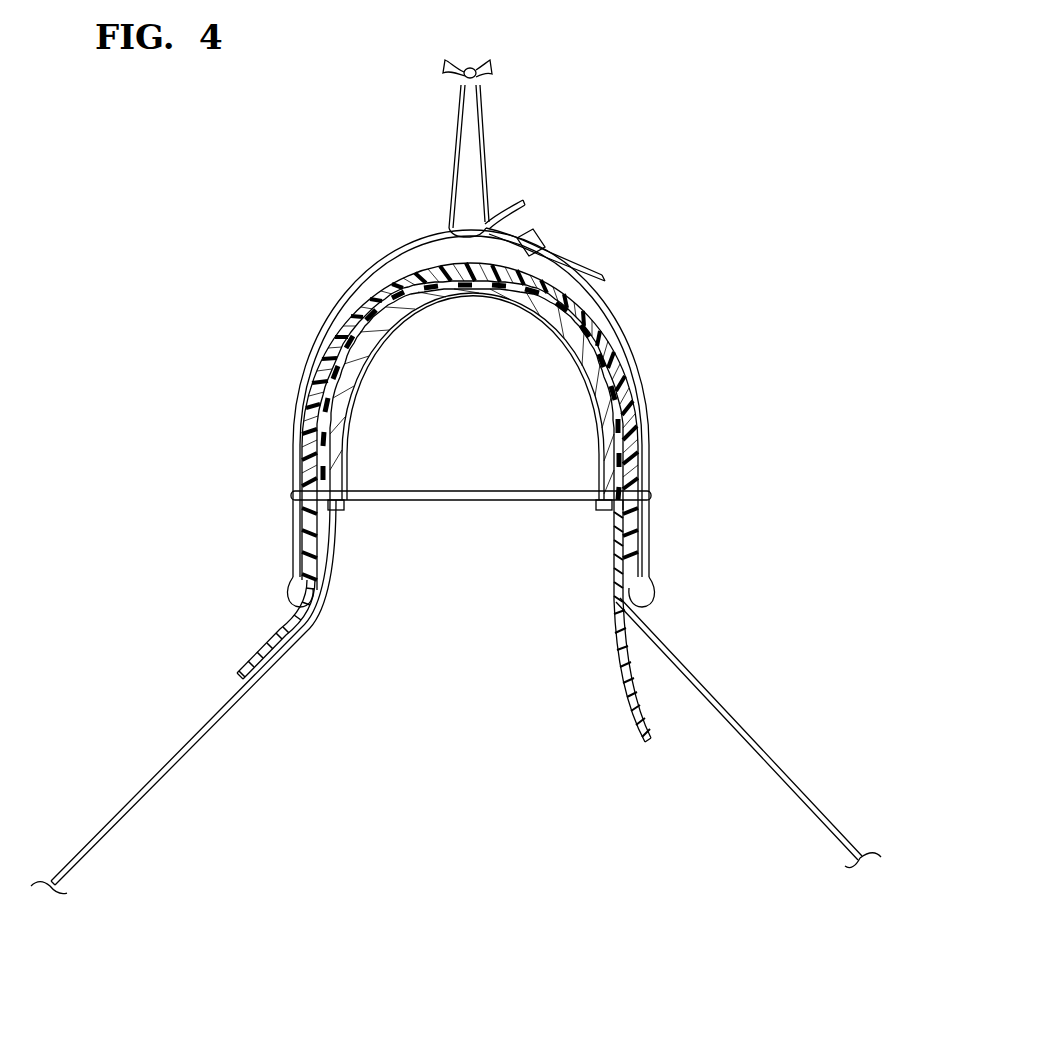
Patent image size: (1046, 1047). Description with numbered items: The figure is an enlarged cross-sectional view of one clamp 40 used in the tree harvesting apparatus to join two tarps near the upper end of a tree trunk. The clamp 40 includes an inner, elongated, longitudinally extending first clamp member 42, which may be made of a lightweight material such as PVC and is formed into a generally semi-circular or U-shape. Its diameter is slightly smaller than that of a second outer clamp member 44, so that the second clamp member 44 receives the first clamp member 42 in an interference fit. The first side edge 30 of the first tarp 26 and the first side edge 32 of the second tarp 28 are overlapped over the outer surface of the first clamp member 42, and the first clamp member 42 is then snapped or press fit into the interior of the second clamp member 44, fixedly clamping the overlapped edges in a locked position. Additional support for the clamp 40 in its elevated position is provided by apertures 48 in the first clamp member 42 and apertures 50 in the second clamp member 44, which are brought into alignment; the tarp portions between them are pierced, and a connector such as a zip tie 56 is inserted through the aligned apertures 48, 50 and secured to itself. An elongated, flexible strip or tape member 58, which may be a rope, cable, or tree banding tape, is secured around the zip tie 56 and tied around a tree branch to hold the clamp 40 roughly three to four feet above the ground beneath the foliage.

The clamp 40 is at (268, 281).
The zip tie 56 is at (616, 311).
The second outer clamp member 44 is at (330, 362).
The first clamp member 42 is at (384, 358).
The apertures in the second clamp member 50 is at (291, 492).
The apertures in the first clamp member 48 is at (345, 495).
The strip or tape member 58 is at (482, 112).
The first side edge of the first tarp 30 is at (648, 742).
The second tarp 28 is at (768, 746).
The first tarp 26 is at (124, 810).
The first side edge of the second tarp 32 is at (245, 688).